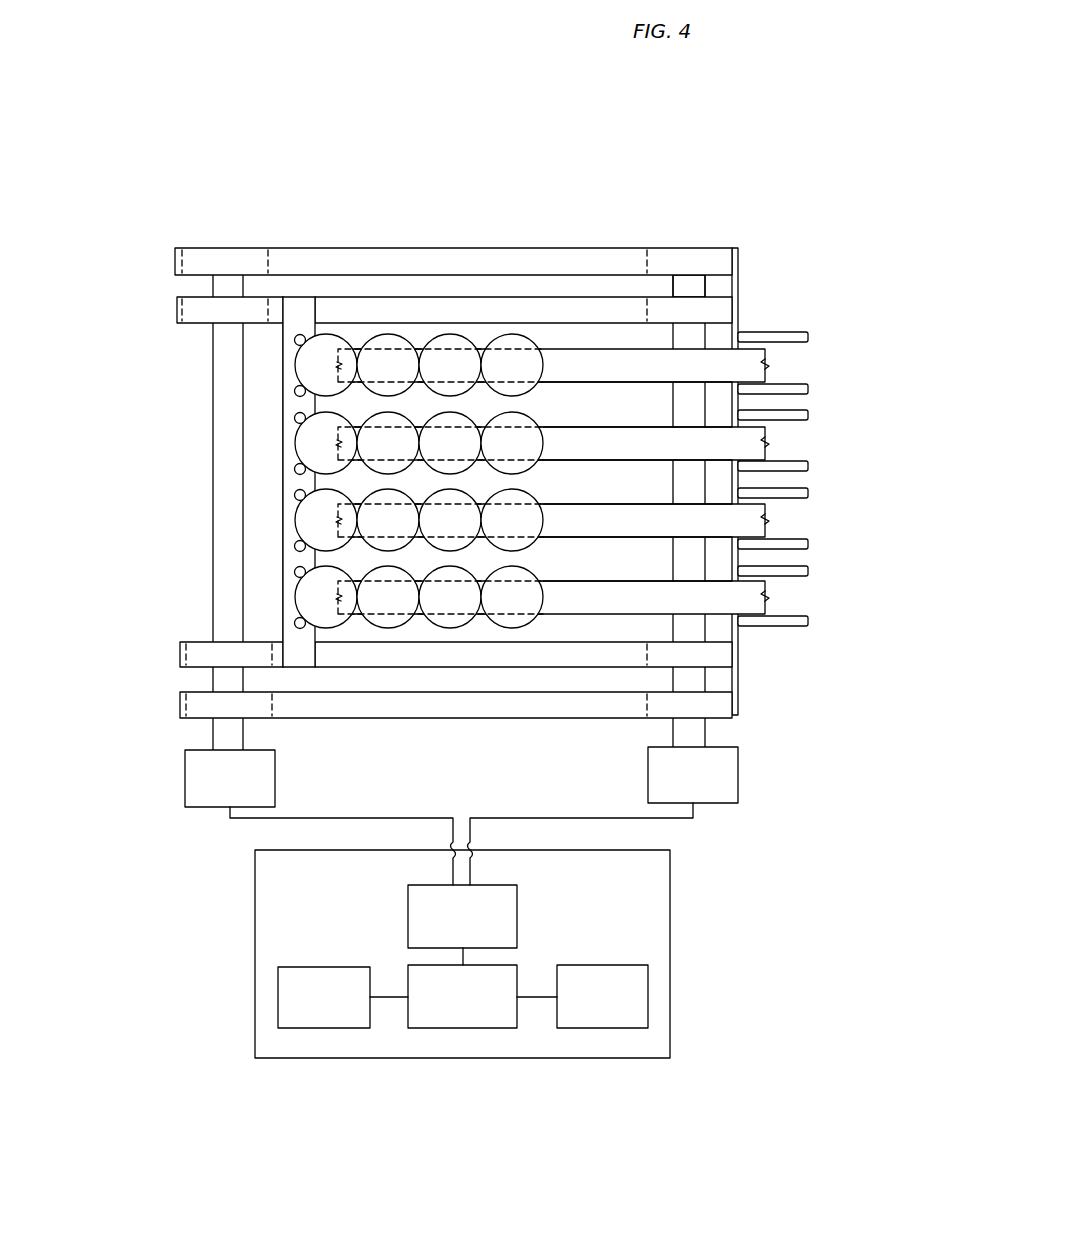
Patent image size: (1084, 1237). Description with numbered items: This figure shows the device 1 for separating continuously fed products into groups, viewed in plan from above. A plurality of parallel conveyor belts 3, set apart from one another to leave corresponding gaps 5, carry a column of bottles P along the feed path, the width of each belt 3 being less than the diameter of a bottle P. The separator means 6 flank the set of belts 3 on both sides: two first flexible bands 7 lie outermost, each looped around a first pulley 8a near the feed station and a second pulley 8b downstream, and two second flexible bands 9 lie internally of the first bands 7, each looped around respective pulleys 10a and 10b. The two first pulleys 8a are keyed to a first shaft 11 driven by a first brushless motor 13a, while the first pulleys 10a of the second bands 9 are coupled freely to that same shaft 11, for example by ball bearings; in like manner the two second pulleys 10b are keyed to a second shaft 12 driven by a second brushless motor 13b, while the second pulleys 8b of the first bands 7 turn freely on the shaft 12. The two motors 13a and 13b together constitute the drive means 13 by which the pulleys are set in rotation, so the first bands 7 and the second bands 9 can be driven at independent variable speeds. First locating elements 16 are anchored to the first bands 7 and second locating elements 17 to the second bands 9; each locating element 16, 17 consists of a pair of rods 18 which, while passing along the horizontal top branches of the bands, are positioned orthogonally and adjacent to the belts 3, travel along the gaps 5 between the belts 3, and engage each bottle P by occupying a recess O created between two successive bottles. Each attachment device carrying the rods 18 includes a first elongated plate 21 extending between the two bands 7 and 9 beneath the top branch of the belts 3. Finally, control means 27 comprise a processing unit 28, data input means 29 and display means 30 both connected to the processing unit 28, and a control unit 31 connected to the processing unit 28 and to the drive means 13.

The device 1 is at (320, 156).
The conveyor belt 3 is at (645, 377).
The gap 5 is at (606, 417).
The separator means 6 is at (174, 593).
The first flexible band 7 is at (508, 249).
The first pulley 8a is at (200, 245).
The second pulley 8b is at (672, 245).
The second flexible band 9 is at (503, 302).
The first pulley 10a is at (200, 313).
The second pulley 10b is at (705, 307).
The first shaft 11 is at (228, 288).
The second shaft 12 is at (693, 283).
The drive means 13 is at (184, 784).
The first brushless motor 13a is at (250, 787).
The second brushless motor 13b is at (713, 784).
The first locating element 16 is at (814, 329).
The second locating element 17 is at (278, 425).
The rod 18 is at (301, 334).
The first elongated plate 21 is at (278, 358).
The control means 27 is at (672, 950).
The processing unit 28 is at (475, 1006).
The data input means 29 is at (335, 1006).
The display means 30 is at (615, 1006).
The control unit 31 is at (474, 926).
The bottle P is at (378, 335).
The recess O is at (310, 628).